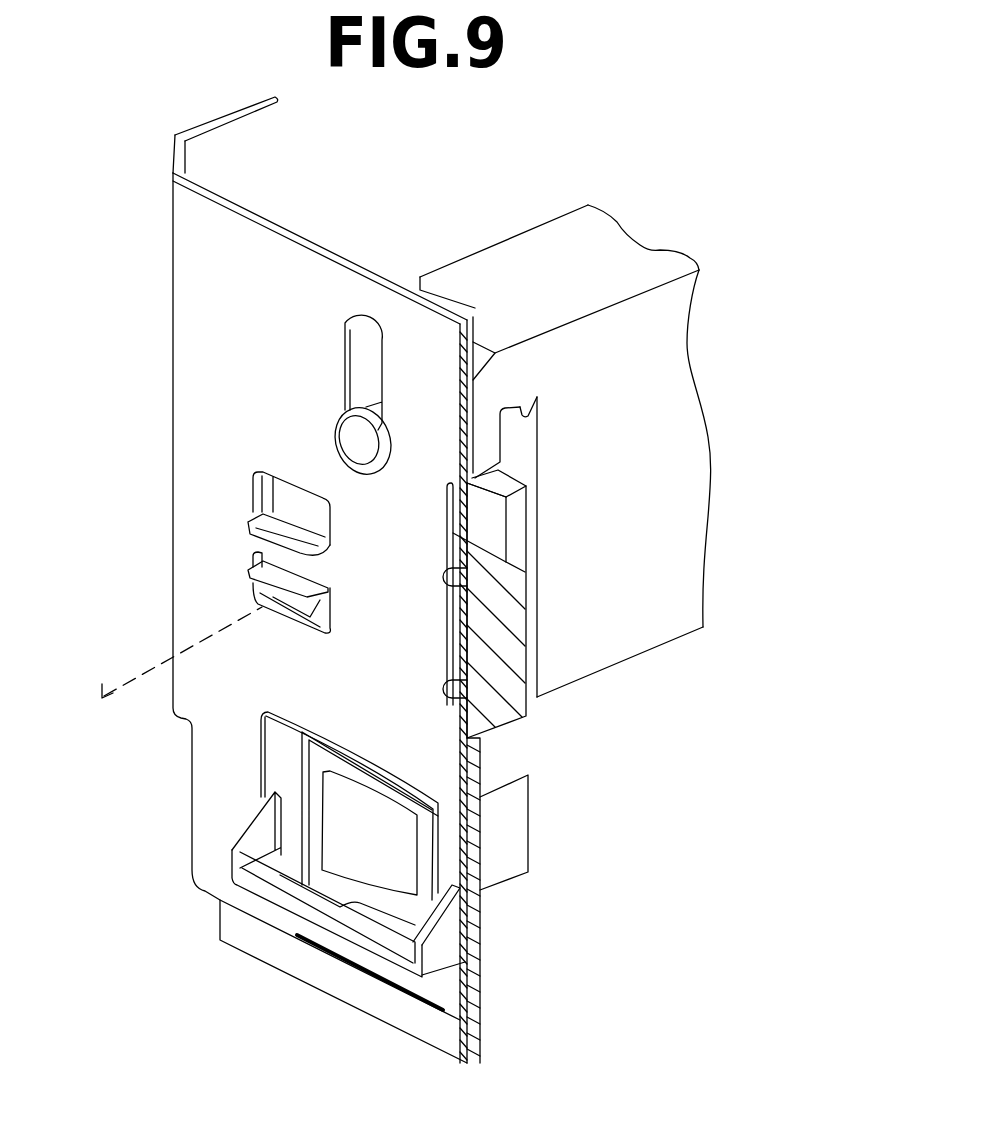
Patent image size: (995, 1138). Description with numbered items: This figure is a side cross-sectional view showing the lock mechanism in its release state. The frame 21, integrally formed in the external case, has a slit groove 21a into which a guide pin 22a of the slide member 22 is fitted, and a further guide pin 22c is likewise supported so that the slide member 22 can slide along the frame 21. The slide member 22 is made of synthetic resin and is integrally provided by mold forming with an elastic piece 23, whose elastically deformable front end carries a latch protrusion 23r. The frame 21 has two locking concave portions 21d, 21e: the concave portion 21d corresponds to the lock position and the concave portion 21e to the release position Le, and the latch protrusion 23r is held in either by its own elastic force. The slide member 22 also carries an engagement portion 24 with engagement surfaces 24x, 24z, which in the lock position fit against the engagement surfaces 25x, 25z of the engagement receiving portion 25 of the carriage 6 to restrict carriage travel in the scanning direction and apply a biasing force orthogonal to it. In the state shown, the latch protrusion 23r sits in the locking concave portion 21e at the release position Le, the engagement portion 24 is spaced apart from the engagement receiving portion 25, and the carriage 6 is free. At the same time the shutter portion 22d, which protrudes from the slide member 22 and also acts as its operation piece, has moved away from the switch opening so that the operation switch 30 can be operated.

The frame 21 is at (193, 280).
The carriage 6 is at (510, 273).
The slit groove 21a is at (350, 340).
The guide pin 22a is at (352, 433).
The engagement receiving portion 25 is at (485, 417).
The engagement surface 25z is at (538, 405).
The engagement surface 25x is at (533, 455).
The slide member 22 is at (515, 716).
The engagement surface 24z is at (507, 483).
The engagement surface 24x is at (527, 510).
The engagement portion 24 is at (483, 518).
The guide pin 22c is at (443, 577).
The elastic piece 23 is at (298, 503).
The locking concave portion 21d is at (258, 488).
The locking concave portion 21e is at (333, 623).
The latch protrusion 23r is at (275, 602).
The release position Le is at (174, 652).
The operation switch 30 is at (513, 867).
The shutter portion 22d is at (310, 912).